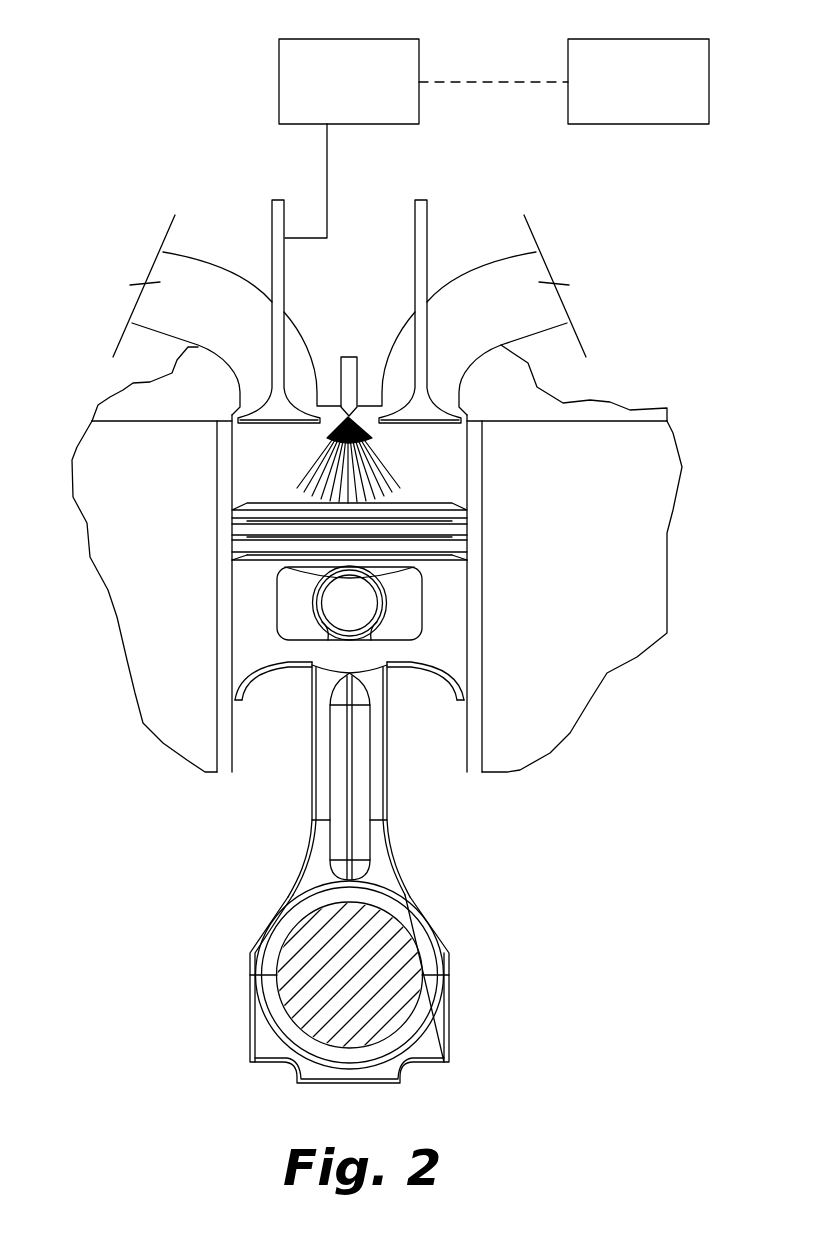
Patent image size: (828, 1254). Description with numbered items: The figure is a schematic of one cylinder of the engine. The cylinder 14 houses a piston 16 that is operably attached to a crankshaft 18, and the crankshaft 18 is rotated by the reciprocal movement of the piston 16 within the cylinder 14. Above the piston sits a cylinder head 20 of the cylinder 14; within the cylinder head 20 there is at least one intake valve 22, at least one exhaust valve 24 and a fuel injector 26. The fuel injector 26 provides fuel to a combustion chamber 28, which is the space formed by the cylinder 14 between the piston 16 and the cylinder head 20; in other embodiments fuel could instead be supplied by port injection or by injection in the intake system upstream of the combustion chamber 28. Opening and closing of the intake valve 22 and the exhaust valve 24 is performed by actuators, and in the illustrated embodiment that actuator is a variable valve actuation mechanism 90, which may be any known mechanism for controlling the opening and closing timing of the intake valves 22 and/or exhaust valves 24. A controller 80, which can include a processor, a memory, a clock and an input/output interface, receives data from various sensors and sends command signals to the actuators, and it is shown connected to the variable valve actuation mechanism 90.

The cylinder 14 is at (187, 488).
The piston 16 is at (442, 589).
The crankshaft 18 is at (377, 933).
The cylinder head 20 is at (628, 421).
The intake valve 22 is at (272, 230).
The exhaust valve 24 is at (428, 228).
The fuel injector 26 is at (360, 370).
The combustion chamber 28 is at (450, 481).
The controller 80 is at (652, 95).
The variable valve actuation (VVA) mechanism 90 is at (363, 95).